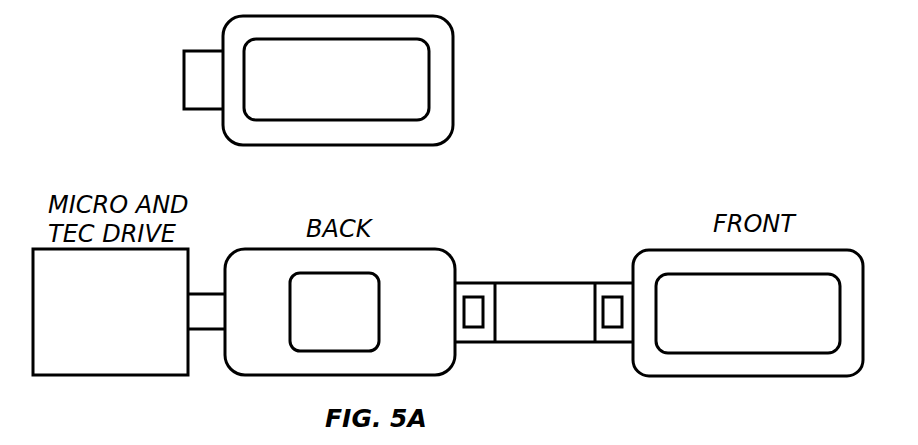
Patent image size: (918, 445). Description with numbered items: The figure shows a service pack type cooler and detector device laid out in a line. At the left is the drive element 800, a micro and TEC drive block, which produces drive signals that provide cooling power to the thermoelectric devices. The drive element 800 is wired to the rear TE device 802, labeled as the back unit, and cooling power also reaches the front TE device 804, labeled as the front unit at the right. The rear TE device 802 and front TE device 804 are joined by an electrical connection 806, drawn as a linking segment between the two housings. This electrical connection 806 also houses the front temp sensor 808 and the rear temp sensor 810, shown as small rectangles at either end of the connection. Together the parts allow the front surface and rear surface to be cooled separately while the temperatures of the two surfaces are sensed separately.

The drive element 800 is at (112, 378).
The rear TE device 802 is at (400, 247).
The front TE device 804 is at (644, 247).
The electrical connection 806 is at (557, 283).
The front temp sensor 808 is at (470, 295).
The rear temp sensor 810 is at (610, 328).